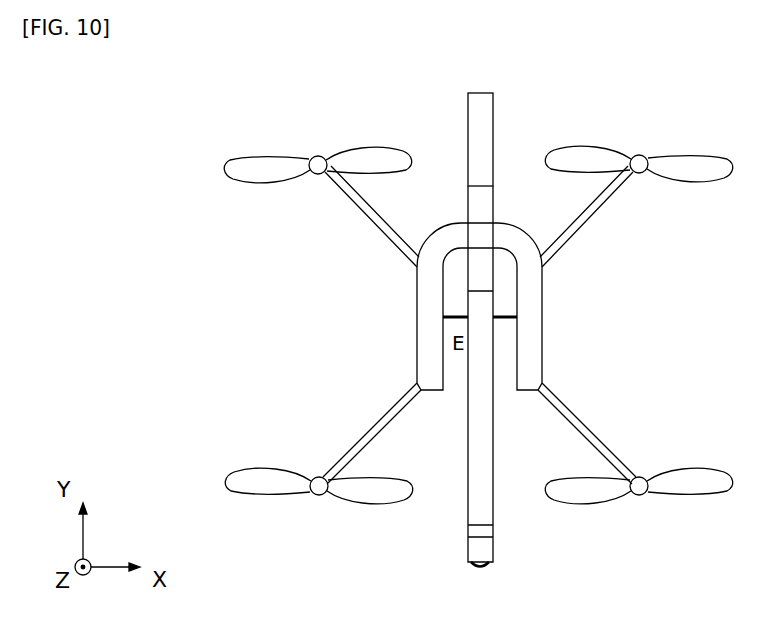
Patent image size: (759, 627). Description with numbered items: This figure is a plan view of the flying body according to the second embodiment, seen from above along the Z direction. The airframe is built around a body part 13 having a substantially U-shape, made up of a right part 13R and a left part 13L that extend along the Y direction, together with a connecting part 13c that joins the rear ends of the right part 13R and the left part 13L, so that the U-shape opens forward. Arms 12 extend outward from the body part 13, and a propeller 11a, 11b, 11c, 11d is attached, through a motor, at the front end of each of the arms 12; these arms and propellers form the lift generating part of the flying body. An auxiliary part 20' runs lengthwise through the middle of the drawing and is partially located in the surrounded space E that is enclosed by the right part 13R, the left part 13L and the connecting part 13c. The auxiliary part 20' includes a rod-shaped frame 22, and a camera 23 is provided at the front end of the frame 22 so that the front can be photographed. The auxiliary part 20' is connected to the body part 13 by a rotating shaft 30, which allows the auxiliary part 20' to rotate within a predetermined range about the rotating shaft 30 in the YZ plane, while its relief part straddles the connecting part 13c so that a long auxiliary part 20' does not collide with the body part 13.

The propeller 11a is at (641, 156).
The propeller 11b is at (313, 157).
The propeller 11c is at (322, 487).
The propeller 11d is at (641, 498).
The arm 12 is at (383, 235).
The body part 13 is at (491, 285).
The connecting part 13c is at (500, 237).
The right part 13R is at (427, 333).
The left part 13L is at (543, 345).
The auxiliary part 20' is at (527, 311).
The frame 22 is at (494, 122).
The camera 23 is at (493, 545).
The rotating shaft 30 is at (507, 322).